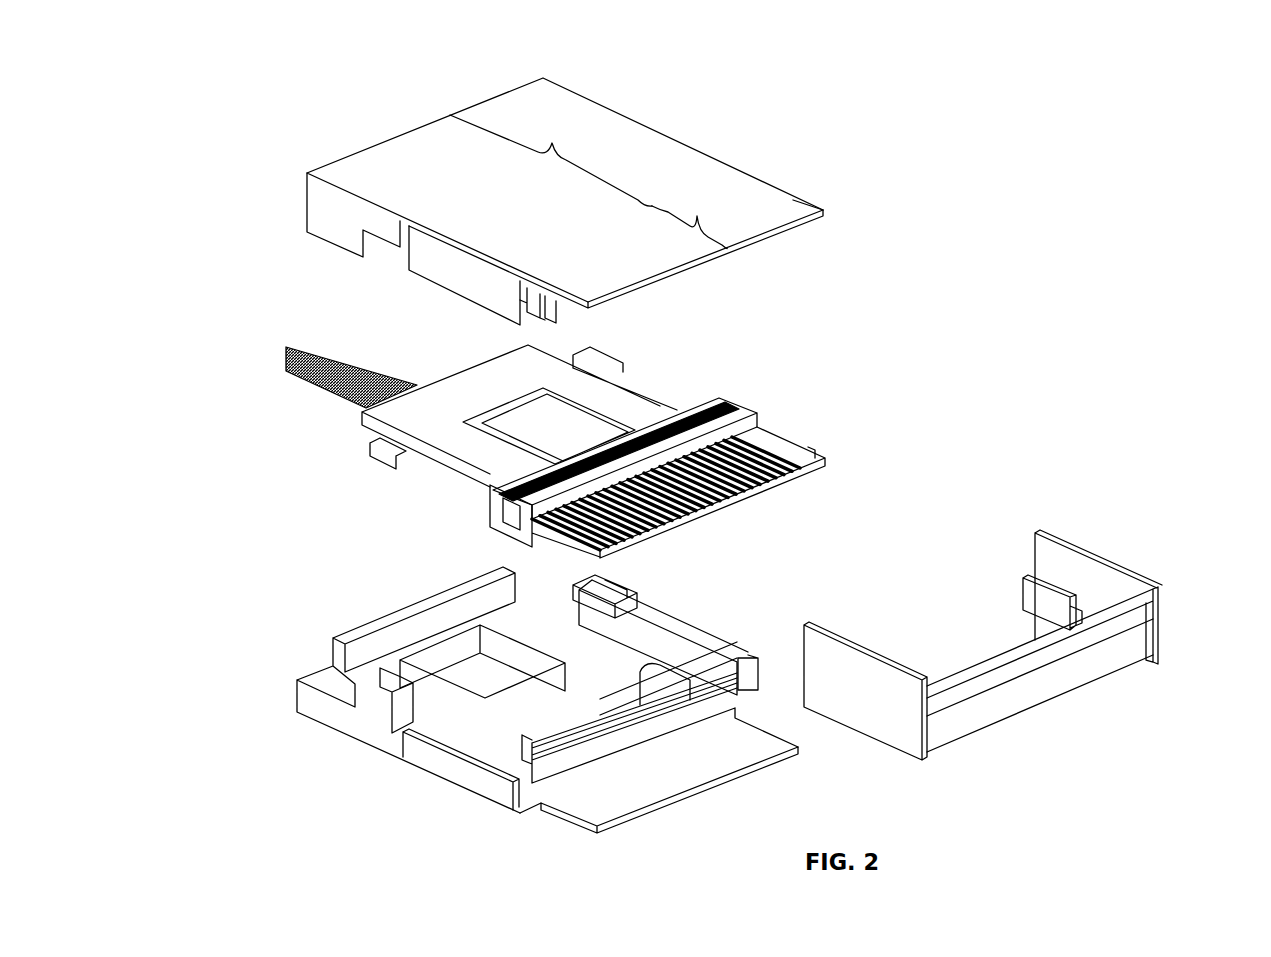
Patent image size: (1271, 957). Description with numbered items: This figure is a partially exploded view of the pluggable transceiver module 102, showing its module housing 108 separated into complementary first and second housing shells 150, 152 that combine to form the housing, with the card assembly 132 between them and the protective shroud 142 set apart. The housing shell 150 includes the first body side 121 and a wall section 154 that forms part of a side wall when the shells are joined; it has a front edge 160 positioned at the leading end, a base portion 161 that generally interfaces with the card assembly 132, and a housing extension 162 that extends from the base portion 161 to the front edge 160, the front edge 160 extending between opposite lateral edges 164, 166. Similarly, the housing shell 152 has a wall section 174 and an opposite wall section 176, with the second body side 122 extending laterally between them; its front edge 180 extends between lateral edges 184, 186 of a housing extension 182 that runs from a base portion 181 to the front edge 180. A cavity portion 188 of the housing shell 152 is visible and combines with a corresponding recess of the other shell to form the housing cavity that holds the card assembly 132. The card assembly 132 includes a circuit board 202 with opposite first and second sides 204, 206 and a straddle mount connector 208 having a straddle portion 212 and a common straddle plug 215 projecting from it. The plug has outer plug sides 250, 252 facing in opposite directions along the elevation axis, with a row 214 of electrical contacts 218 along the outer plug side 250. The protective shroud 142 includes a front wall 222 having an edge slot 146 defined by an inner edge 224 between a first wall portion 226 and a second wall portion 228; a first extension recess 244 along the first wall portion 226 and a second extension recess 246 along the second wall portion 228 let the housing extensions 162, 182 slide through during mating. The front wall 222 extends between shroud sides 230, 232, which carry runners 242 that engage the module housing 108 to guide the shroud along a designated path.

The pluggable transceiver module 102 is at (1105, 92).
The module housing 108 is at (277, 144).
The first body side 121 is at (548, 100).
The second body side 122 is at (467, 783).
The card assembly 132 is at (345, 476).
The protective shroud 142 is at (1172, 544).
The edge slot 146 is at (963, 690).
The first housing shell 150 is at (678, 110).
The second housing shell 152 is at (392, 800).
The wall section 154 is at (420, 274).
The front edge 160 is at (773, 234).
The base portion 161 is at (551, 160).
The housing extension 162 is at (689, 216).
The lateral edge 164 is at (572, 303).
The lateral edge 166 is at (795, 196).
The wall section 174 is at (365, 738).
The wall section 176 is at (700, 627).
The front edge 180 is at (703, 787).
The base portion 181 is at (640, 705).
The housing extension 182 is at (727, 770).
The lateral edge 184 is at (580, 817).
The lateral edge 186 is at (790, 732).
The cavity portion 188 is at (543, 700).
The circuit board 202 is at (462, 390).
The first side 204 is at (590, 386).
The second side 206 is at (428, 491).
The straddle mount connector 208 is at (775, 415).
The straddle portion 212 is at (748, 410).
The row of electrical contacts 214 is at (786, 452).
The common straddle plug 215 is at (508, 531).
The electrical contacts 218 is at (806, 445).
The front wall 222 is at (1145, 647).
The inner edge 224 is at (1020, 675).
The first wall portion 226 is at (1118, 620).
The second wall portion 228 is at (1105, 662).
The shroud side 230 is at (842, 665).
The shroud side 232 is at (1075, 551).
The runner 242 is at (1028, 597).
The first extension recess 244 is at (947, 672).
The second extension recess 246 is at (960, 748).
The outer plug side 250 is at (765, 449).
The outer plug side 252 is at (752, 505).